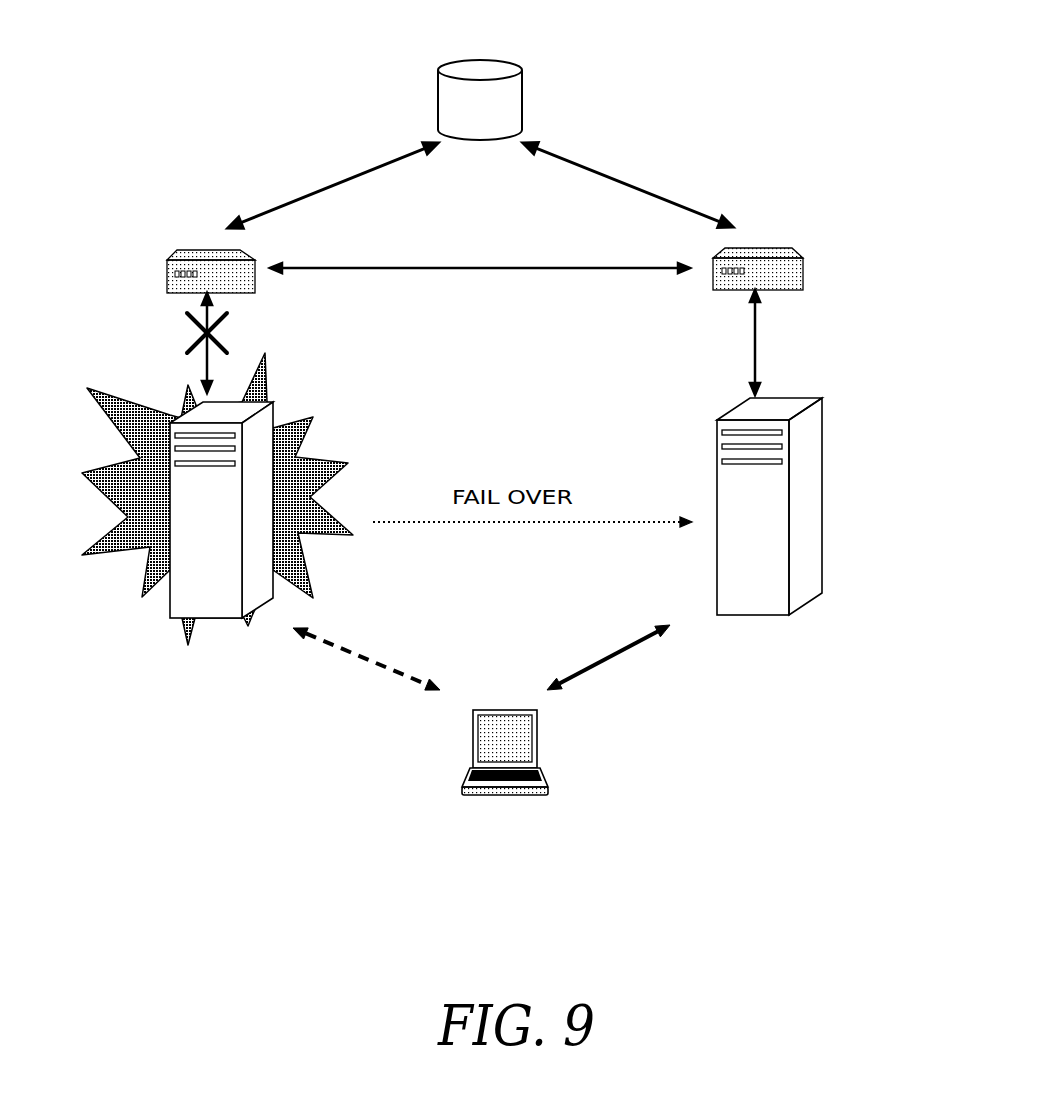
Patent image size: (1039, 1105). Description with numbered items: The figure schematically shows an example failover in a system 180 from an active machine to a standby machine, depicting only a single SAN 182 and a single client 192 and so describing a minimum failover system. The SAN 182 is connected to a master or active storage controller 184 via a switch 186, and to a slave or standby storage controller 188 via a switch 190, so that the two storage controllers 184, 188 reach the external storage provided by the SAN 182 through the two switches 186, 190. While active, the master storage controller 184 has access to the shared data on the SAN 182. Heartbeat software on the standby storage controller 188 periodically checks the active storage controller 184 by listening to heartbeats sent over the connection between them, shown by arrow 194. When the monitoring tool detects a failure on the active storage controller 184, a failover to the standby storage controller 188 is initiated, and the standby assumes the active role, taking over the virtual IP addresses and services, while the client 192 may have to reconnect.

The system 180 is at (258, 45).
The SAN 182 is at (493, 62).
The active storage controller 184 is at (273, 402).
The switch 186 is at (247, 260).
The standby storage controller 188 is at (822, 398).
The switch 190 is at (795, 248).
The client 192 is at (538, 742).
The arrow 194 is at (449, 268).